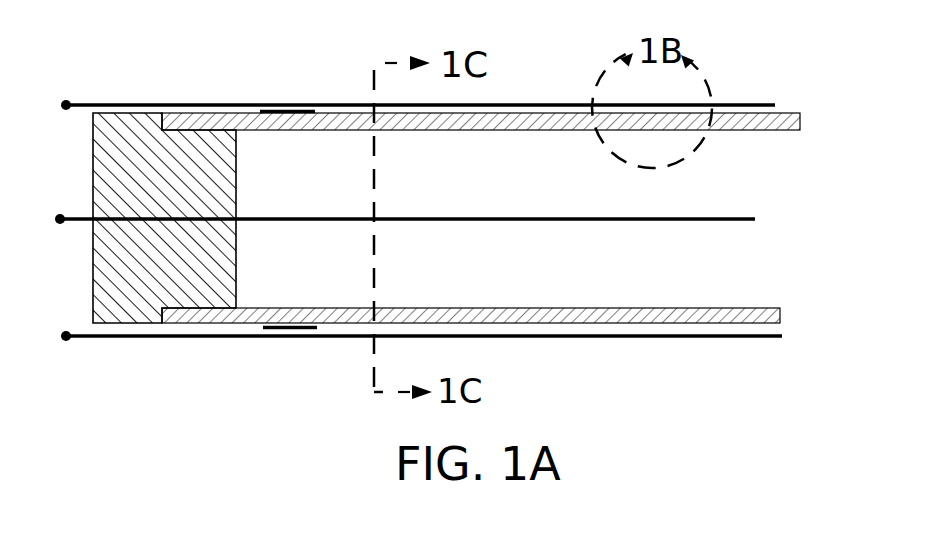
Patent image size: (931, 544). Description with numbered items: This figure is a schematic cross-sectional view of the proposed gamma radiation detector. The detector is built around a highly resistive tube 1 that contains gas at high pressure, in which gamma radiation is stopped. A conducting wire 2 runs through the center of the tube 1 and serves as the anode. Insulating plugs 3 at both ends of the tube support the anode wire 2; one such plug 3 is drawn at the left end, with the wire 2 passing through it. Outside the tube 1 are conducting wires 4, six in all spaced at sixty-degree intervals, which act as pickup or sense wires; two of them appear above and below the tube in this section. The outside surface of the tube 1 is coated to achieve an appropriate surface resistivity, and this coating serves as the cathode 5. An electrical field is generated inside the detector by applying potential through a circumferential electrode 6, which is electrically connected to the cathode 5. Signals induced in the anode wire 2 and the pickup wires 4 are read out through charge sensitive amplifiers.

The highly resistive tube 1 is at (482, 132).
The conducting wire 2 is at (587, 222).
The insulating plug 3 is at (176, 281).
The conducting wires 4 is at (577, 338).
The cathode 5 is at (790, 106).
The circumferential electrode 6 is at (296, 325).